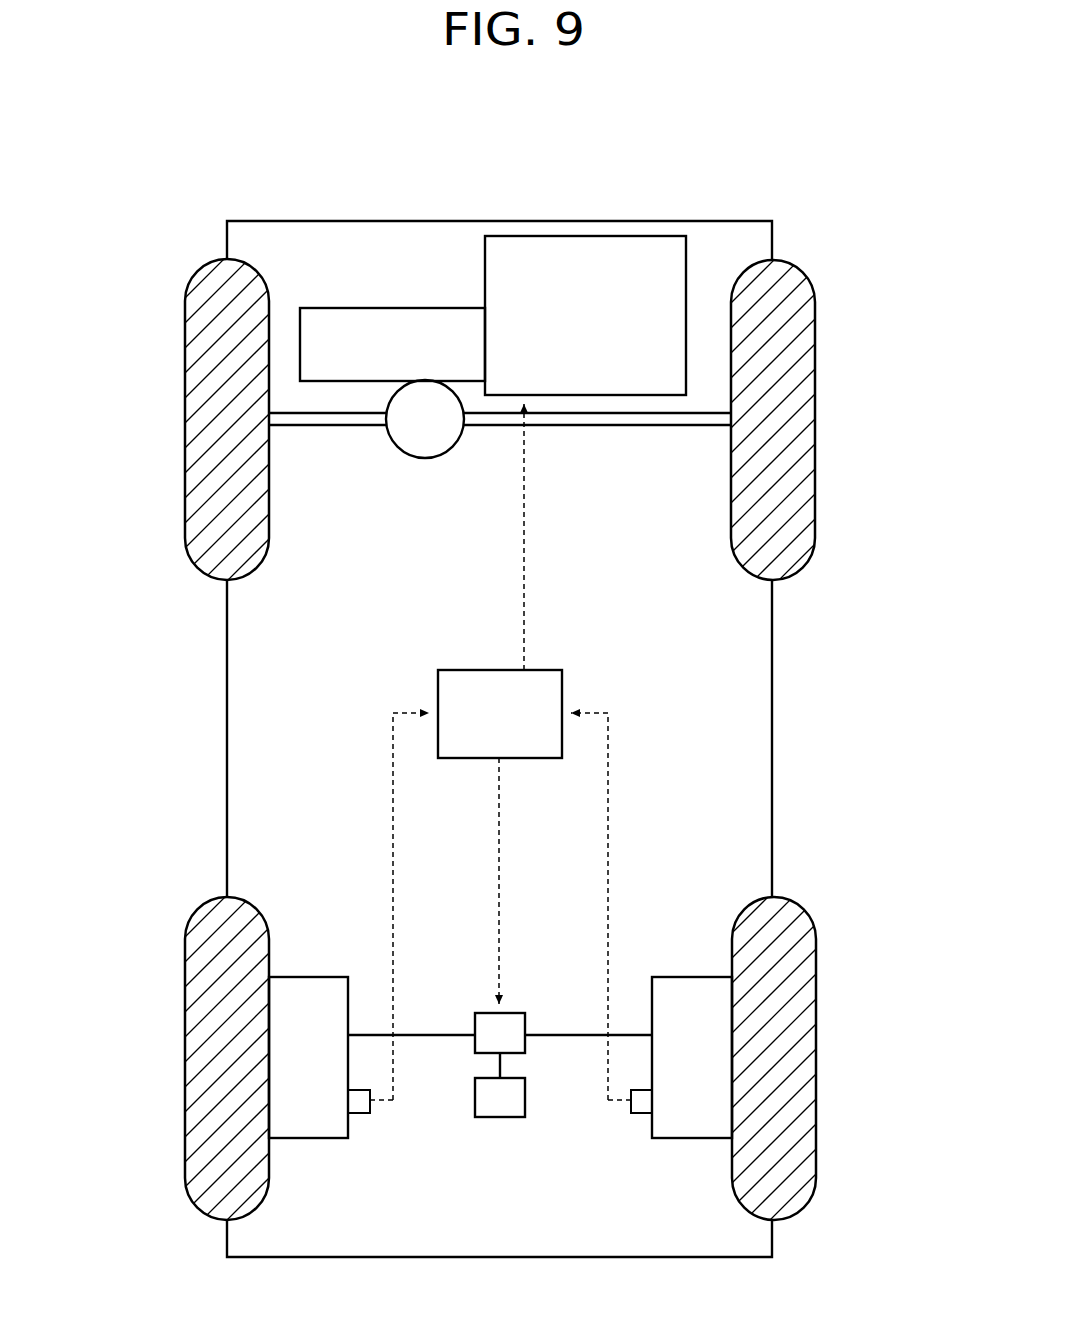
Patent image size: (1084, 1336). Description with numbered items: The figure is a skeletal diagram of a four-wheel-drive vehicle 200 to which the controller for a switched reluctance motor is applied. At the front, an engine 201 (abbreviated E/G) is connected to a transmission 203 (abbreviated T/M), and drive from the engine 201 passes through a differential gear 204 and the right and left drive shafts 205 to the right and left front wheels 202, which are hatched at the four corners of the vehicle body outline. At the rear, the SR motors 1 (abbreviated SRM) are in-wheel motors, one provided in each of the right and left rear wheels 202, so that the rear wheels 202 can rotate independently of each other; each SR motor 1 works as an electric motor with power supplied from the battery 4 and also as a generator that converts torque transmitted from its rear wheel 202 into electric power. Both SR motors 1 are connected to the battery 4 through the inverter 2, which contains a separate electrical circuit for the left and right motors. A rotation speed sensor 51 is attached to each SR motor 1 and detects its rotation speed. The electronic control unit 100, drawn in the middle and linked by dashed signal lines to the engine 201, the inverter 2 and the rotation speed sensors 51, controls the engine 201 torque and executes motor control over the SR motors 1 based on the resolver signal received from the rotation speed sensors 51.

The vehicle 200 is at (762, 154).
The engine 201 is at (605, 236).
The wheels 202 is at (185, 420).
The transmission 203 is at (343, 308).
The differential gear 204 is at (428, 460).
The drive shafts 205 is at (330, 428).
The electronic control unit 100 is at (545, 670).
The SR motor 1 is at (293, 977).
The rotation speed sensor 51 is at (358, 1113).
The inverter 2 is at (505, 1013).
The battery 4 is at (500, 1117).